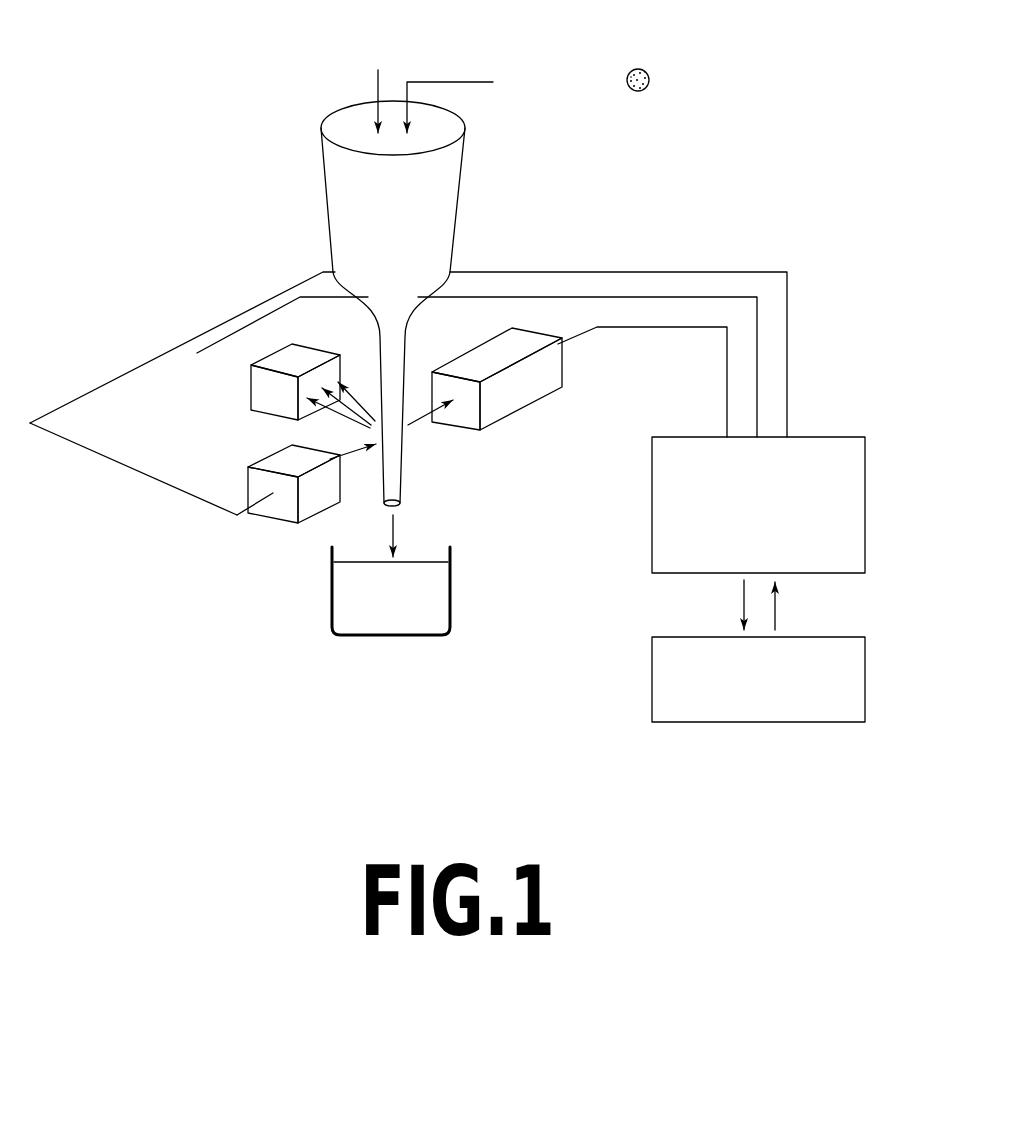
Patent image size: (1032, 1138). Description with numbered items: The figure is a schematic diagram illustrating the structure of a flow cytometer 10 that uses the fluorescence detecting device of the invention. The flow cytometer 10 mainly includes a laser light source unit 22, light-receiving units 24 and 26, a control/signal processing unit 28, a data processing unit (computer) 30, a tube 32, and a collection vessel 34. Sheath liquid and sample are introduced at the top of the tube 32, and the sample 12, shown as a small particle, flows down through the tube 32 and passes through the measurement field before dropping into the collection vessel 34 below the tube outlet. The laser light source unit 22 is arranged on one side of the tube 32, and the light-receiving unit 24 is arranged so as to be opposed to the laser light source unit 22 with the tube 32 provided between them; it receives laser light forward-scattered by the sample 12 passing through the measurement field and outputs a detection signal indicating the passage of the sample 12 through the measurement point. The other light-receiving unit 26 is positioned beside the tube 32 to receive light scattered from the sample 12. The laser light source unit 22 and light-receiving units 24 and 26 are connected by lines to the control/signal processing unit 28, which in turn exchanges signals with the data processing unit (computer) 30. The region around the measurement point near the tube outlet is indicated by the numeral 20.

The flow cytometer 10 is at (247, 667).
The sample 12 is at (647, 70).
The measurement section 20 is at (481, 494).
The laser light source unit 22 is at (273, 523).
The light-receiving unit 24 is at (527, 407).
The light-receiving unit 26 is at (248, 407).
The control/signal processing unit 28 is at (815, 437).
The data processing unit (computer) 30 is at (753, 722).
The tube 32 is at (407, 336).
The collection vessel 34 is at (387, 625).